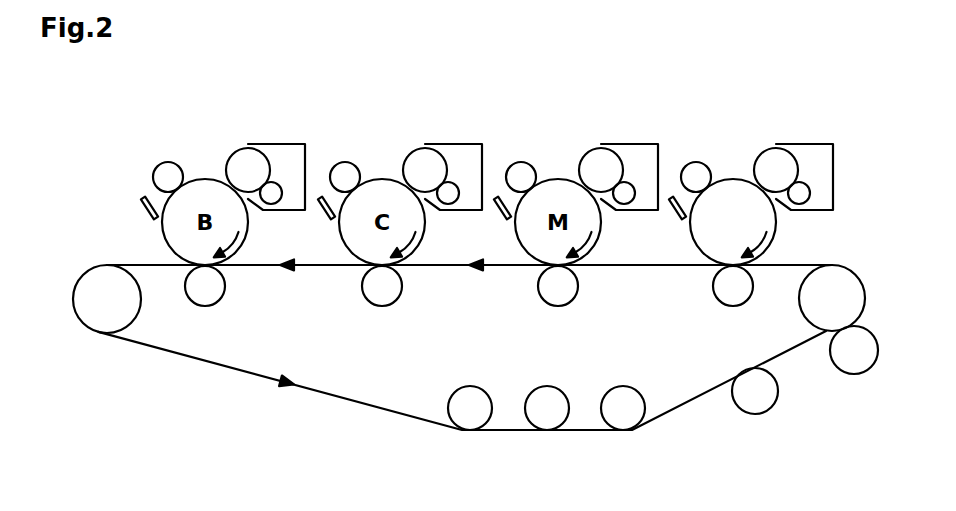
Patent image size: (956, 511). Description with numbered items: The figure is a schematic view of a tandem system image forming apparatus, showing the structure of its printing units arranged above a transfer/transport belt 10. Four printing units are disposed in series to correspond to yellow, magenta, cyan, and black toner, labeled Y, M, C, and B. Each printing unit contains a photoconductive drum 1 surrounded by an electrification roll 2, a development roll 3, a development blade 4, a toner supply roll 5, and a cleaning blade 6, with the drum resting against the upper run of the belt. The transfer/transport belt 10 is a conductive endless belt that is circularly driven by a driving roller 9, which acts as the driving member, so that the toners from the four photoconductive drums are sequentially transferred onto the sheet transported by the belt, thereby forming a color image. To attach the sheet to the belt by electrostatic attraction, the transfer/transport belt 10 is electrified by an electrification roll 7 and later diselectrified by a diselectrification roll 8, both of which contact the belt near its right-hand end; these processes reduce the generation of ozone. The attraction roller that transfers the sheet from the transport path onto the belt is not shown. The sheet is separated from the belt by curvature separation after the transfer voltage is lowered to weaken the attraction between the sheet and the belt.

The photoconductive drum 1 is at (763, 222).
The electrification roll 2 is at (701, 141).
The development roll 3 is at (774, 139).
The development blade 4 is at (807, 149).
The toner supply roll 5 is at (830, 181).
The cleaning blade 6 is at (669, 269).
The electrification roll 7 is at (854, 384).
The diselectrification roll 8 is at (755, 428).
The driving roller 9 is at (107, 358).
The transfer/transport belt 10 is at (465, 345).